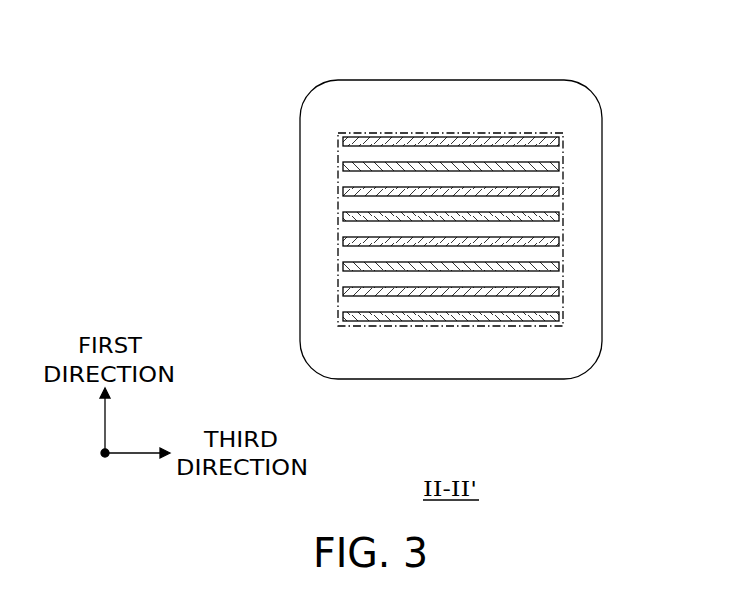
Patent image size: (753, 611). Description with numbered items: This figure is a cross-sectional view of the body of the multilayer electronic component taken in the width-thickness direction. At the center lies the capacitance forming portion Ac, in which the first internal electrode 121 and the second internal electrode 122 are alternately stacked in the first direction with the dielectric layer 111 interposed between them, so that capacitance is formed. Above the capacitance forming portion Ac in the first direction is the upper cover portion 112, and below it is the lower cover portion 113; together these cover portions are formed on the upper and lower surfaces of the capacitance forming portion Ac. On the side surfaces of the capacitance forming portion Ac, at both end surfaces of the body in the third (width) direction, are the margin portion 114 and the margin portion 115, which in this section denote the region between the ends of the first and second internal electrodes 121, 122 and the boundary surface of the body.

The dielectric layer 111 is at (452, 170).
The upper cover portion 112 is at (418, 98).
The lower cover portion 113 is at (417, 362).
The margin portion 114 is at (315, 313).
The margin portion 115 is at (588, 229).
The first internal electrode 121 is at (483, 142).
The second internal electrode 122 is at (523, 217).
The capacitance forming portion Ac is at (572, 308).